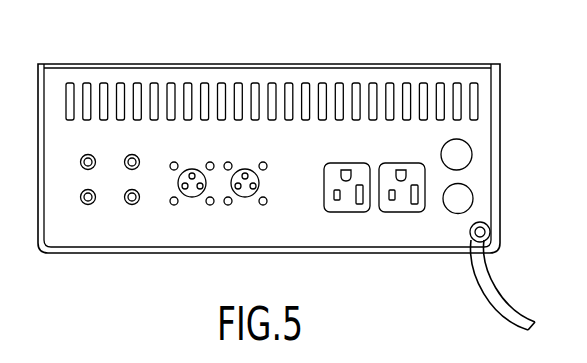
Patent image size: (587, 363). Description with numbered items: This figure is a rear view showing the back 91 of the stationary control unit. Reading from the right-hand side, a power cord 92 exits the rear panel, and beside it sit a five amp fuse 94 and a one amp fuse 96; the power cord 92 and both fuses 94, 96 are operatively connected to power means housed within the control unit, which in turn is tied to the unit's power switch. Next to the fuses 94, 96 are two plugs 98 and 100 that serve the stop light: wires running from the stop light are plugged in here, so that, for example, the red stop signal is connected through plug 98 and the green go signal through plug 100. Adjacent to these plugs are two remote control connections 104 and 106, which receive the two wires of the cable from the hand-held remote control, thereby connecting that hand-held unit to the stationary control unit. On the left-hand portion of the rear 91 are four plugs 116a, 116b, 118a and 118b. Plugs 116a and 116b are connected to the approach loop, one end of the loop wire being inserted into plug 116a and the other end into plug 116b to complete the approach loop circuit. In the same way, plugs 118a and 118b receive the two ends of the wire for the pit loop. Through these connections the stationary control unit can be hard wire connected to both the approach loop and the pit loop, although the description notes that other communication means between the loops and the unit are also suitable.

The back of the stationary control unit 91 is at (123, 228).
The power cord 92 is at (505, 288).
The five amp fuse 94 is at (463, 155).
The one amp fuse 96 is at (465, 200).
The plug 98 is at (403, 203).
The plug 100 is at (345, 202).
The remote control connection 104 is at (250, 192).
The remote control connection 106 is at (196, 192).
The plug 116a is at (161, 137).
The plug 116b is at (139, 204).
The plug 118a is at (80, 163).
The plug 118b is at (80, 196).